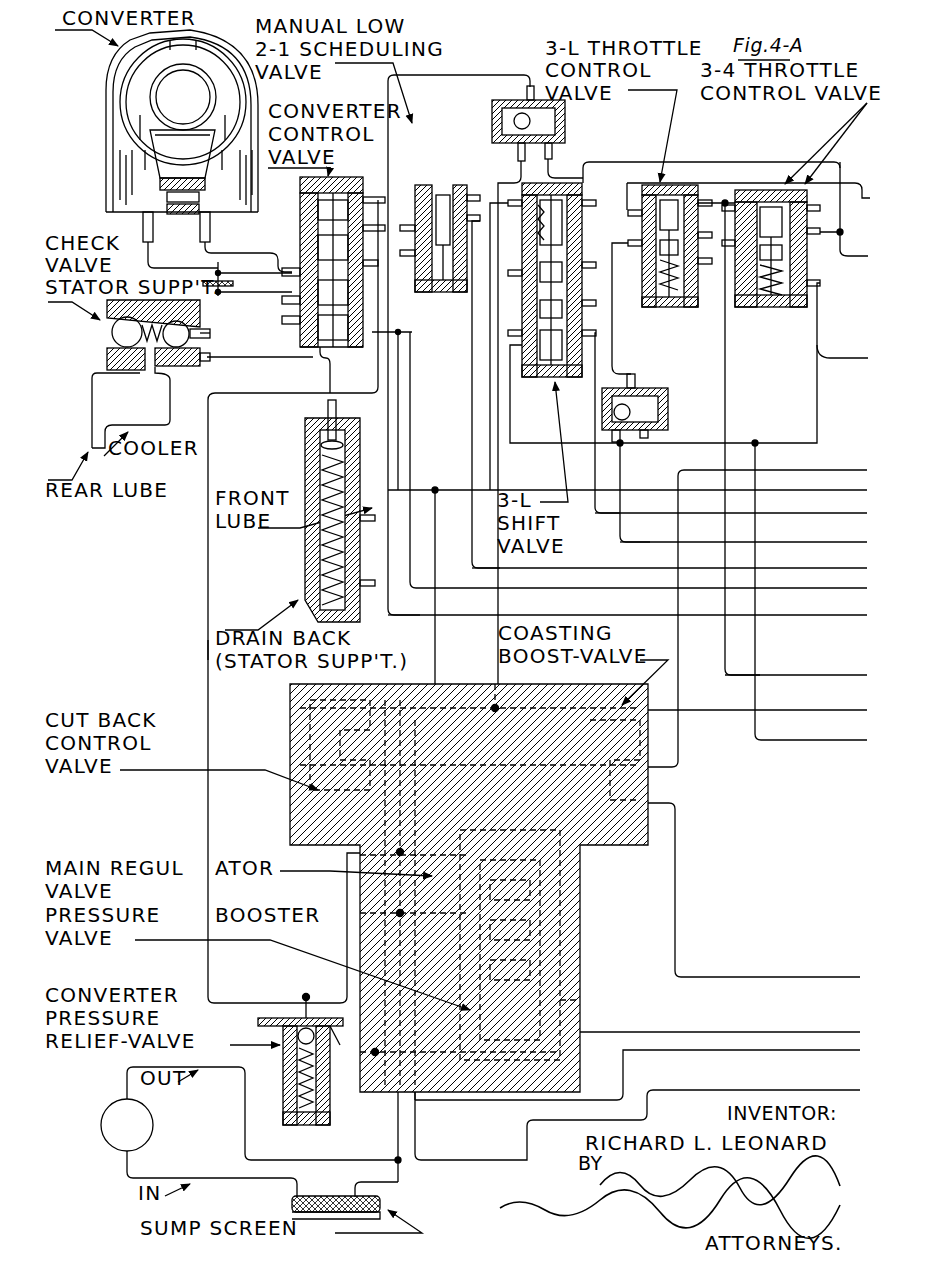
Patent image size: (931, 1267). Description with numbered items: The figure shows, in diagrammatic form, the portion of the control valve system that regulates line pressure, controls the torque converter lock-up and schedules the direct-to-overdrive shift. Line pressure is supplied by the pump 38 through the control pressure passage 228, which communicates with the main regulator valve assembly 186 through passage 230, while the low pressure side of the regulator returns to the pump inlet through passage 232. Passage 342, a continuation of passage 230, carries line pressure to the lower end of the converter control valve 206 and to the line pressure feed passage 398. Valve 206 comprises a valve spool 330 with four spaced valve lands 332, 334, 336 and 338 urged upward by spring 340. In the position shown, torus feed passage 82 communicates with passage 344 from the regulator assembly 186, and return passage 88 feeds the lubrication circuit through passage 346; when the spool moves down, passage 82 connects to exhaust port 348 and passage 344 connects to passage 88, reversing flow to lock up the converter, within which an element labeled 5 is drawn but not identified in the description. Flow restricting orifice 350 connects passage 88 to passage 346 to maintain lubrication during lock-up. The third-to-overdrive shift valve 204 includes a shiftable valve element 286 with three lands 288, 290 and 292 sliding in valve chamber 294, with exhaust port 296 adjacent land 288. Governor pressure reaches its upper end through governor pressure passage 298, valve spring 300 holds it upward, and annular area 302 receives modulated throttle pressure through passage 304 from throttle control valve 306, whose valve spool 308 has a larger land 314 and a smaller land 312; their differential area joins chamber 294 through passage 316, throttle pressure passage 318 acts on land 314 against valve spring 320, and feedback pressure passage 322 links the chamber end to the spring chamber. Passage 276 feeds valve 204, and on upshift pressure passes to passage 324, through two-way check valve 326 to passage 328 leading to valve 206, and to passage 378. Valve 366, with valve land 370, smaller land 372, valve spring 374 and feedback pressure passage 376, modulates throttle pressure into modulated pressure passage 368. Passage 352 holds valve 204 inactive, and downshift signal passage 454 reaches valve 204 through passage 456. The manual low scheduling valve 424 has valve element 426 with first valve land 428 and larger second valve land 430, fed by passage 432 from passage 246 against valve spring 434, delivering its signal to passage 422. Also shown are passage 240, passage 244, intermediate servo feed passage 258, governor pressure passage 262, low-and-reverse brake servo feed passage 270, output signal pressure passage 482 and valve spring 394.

The stator 5 is at (182, 122).
The pump 38 is at (101, 1120).
The passage 82 is at (200, 227).
The passage 88 is at (140, 229).
The pressure regulator valve assembly 186 is at (582, 966).
The third-to-overdrive shift valve 204 is at (541, 383).
The converter control valve 206 is at (300, 362).
The control pressure passage 228 is at (764, 1092).
The passage 230 is at (396, 1140).
The passage 232 is at (418, 1112).
The passage 240 is at (843, 966).
The passage 244 is at (842, 1032).
The passage 246 is at (844, 596).
The intermediate servo feed passage 258 is at (845, 462).
The governor pressure passage 262 is at (854, 710).
The low-and-reverse brake servo feed passage 270 is at (844, 574).
The passage 276 is at (844, 520).
The shiftable valve element 286 is at (590, 305).
The valve land 288 is at (560, 195).
The valve land 290 is at (592, 335).
The valve land 292 is at (560, 342).
The valve chamber 294 is at (627, 405).
The exhaust port 296 is at (588, 270).
The governor pressure passage 298 is at (488, 480).
The valve spring 300 is at (575, 200).
The annular area 302 is at (507, 195).
The passage 304 is at (596, 183).
The throttle control valve 306 is at (650, 330).
The valve spool 308 is at (672, 205).
The valve land 312 is at (675, 225).
The valve land 314 is at (668, 186).
The passage 316 is at (650, 188).
The throttle pressure passage 318 is at (855, 664).
The valve spring 320 is at (655, 310).
The feedback pressure passage 322 is at (652, 320).
The passage 324 is at (512, 133).
The two-way check valve 326 is at (498, 110).
The passage 328 is at (414, 76).
The valve spool 330 is at (320, 238).
The valve land 332 is at (292, 320).
The valve land 334 is at (292, 270).
The valve land 336 is at (320, 210).
The valve land 338 is at (318, 196).
The spring 340 is at (292, 340).
The passage 342 is at (398, 470).
The passage 344 is at (208, 648).
The passage 346 is at (292, 300).
The exhaust port 348 is at (345, 193).
The flow restricting orifice 350 is at (202, 253).
The passage 352 is at (844, 548).
The throttle control valve 366 is at (772, 190).
The modulated pressure passage 368 is at (832, 358).
The valve land 370 is at (767, 192).
The valve land 372 is at (832, 258).
The valve spring 374 is at (772, 308).
The feedback pressure passage 376 is at (746, 308).
The passage 378 is at (792, 200).
The valve spring 394 is at (636, 413).
The line pressure feed passage 398 is at (828, 183).
The passage 422 is at (844, 622).
The manual low 2-1 scheduling valve 424 is at (438, 293).
The valve element 426 is at (449, 192).
The first valve land 428 is at (525, 322).
The second valve land 430 is at (392, 200).
The passage 432 is at (472, 412).
The valve spring 434 is at (446, 196).
The passage 454 is at (857, 744).
The passage 456 is at (725, 398).
The output signal pressure passage 482 is at (786, 1052).